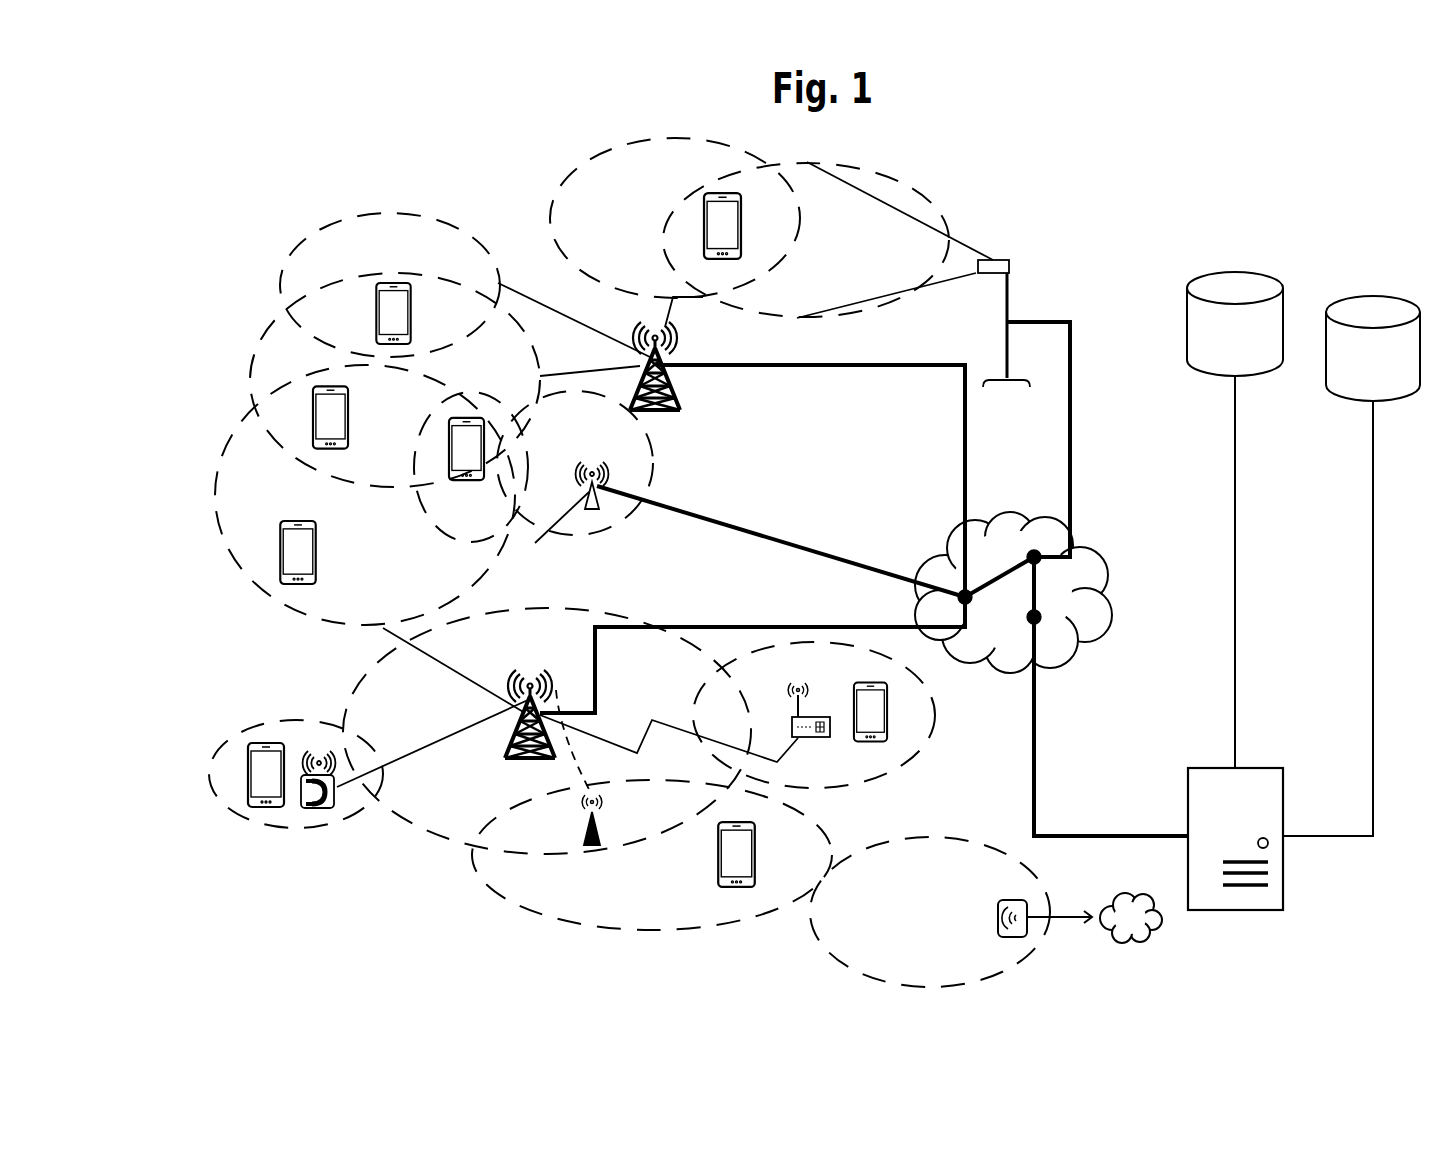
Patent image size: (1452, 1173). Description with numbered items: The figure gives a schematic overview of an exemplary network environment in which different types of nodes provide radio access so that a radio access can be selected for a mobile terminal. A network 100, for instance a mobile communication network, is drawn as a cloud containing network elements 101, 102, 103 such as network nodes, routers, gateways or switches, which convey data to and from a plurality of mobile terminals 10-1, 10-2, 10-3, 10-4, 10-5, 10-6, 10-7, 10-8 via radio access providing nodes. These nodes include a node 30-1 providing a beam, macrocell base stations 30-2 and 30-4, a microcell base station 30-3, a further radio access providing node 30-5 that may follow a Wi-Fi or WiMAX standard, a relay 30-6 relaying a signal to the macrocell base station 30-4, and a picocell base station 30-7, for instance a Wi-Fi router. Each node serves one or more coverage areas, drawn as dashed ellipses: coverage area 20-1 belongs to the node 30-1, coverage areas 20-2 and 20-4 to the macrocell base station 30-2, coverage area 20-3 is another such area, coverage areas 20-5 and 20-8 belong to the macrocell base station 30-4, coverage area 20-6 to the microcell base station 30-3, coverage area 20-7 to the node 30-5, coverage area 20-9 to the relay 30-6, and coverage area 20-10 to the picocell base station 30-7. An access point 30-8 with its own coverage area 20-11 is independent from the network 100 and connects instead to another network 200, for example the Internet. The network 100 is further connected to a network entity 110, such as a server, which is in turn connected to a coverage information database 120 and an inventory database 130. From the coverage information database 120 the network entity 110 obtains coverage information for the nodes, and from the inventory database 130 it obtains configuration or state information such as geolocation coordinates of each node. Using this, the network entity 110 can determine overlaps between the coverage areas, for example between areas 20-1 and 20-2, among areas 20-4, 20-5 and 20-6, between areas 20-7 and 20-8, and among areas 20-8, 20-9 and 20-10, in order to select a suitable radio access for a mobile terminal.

The mobile terminal 10-1 is at (742, 236).
The mobile terminal 10-2 is at (412, 298).
The mobile terminal 10-3 is at (349, 403).
The mobile terminal 10-4 is at (485, 443).
The mobile terminal 10-5 is at (318, 543).
The mobile terminal 10-6 is at (247, 782).
The mobile terminal 10-7 is at (717, 866).
The mobile terminal 10-8 is at (888, 722).
The coverage area 20-1 is at (905, 185).
The coverage area 20-2 is at (643, 143).
The coverage area 20-3 is at (393, 213).
The coverage area 20-4 is at (268, 332).
The coverage area 20-5 is at (220, 445).
The coverage area 20-6 is at (655, 472).
The coverage area 20-7 is at (240, 732).
The coverage area 20-8 is at (397, 818).
The coverage area 20-9 is at (597, 930).
The coverage area 20-10 is at (887, 772).
The coverage area 20-11 is at (1040, 877).
The radio access providing node 30-1 is at (1006, 259).
The macrocell base station 30-2 is at (680, 387).
The microcell base station 30-3 is at (595, 508).
The macrocell base station 30-4 is at (510, 748).
The radio access providing node 30-5 is at (330, 810).
The relay 30-6 is at (600, 820).
The picocell base station 30-7 is at (815, 739).
The access point 30-8 is at (1028, 927).
The network 100 is at (1077, 600).
The network element 101 is at (1028, 627).
The network element 102 is at (1027, 548).
The network element 103 is at (952, 575).
The network entity 110 is at (1278, 910).
The coverage information database 120 is at (1252, 280).
The inventory database 130 is at (1352, 303).
The another network 200 is at (1140, 940).